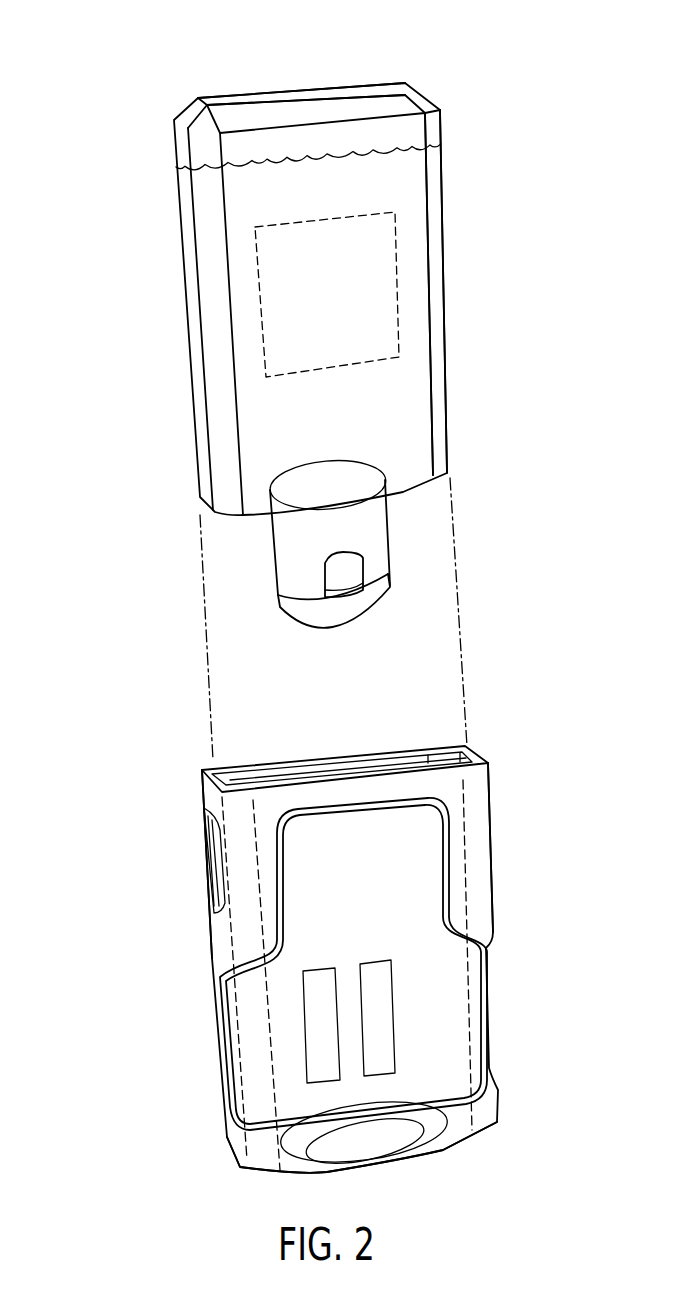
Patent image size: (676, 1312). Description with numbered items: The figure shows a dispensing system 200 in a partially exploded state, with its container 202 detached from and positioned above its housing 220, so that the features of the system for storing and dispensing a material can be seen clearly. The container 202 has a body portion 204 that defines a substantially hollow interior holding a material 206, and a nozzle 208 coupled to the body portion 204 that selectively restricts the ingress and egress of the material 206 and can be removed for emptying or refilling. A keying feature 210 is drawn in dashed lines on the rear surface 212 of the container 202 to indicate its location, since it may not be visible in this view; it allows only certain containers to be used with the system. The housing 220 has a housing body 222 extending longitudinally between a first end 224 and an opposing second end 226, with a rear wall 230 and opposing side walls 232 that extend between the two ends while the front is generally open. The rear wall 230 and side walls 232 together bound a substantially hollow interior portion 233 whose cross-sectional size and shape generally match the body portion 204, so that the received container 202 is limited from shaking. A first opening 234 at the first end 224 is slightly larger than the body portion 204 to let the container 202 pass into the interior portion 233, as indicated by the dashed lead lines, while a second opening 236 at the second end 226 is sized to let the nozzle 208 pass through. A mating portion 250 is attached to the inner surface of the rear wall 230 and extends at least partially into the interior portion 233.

The dispensing system 200 is at (78, 53).
The container 202 is at (427, 100).
The body portion 204 is at (447, 305).
The material 206 is at (238, 195).
The nozzle 208 is at (377, 538).
The keying feature 210 is at (397, 235).
The rear surface 212 is at (258, 86).
The housing 220 is at (490, 792).
The housing body 222 is at (211, 860).
The first end 224 is at (200, 771).
The second end 226 is at (230, 1155).
The rear wall 230 is at (297, 857).
The side walls 232 is at (215, 943).
The interior portion 233 is at (450, 853).
The first opening 234 is at (338, 767).
The second opening 236 is at (303, 1122).
The mating portion 250 is at (370, 962).